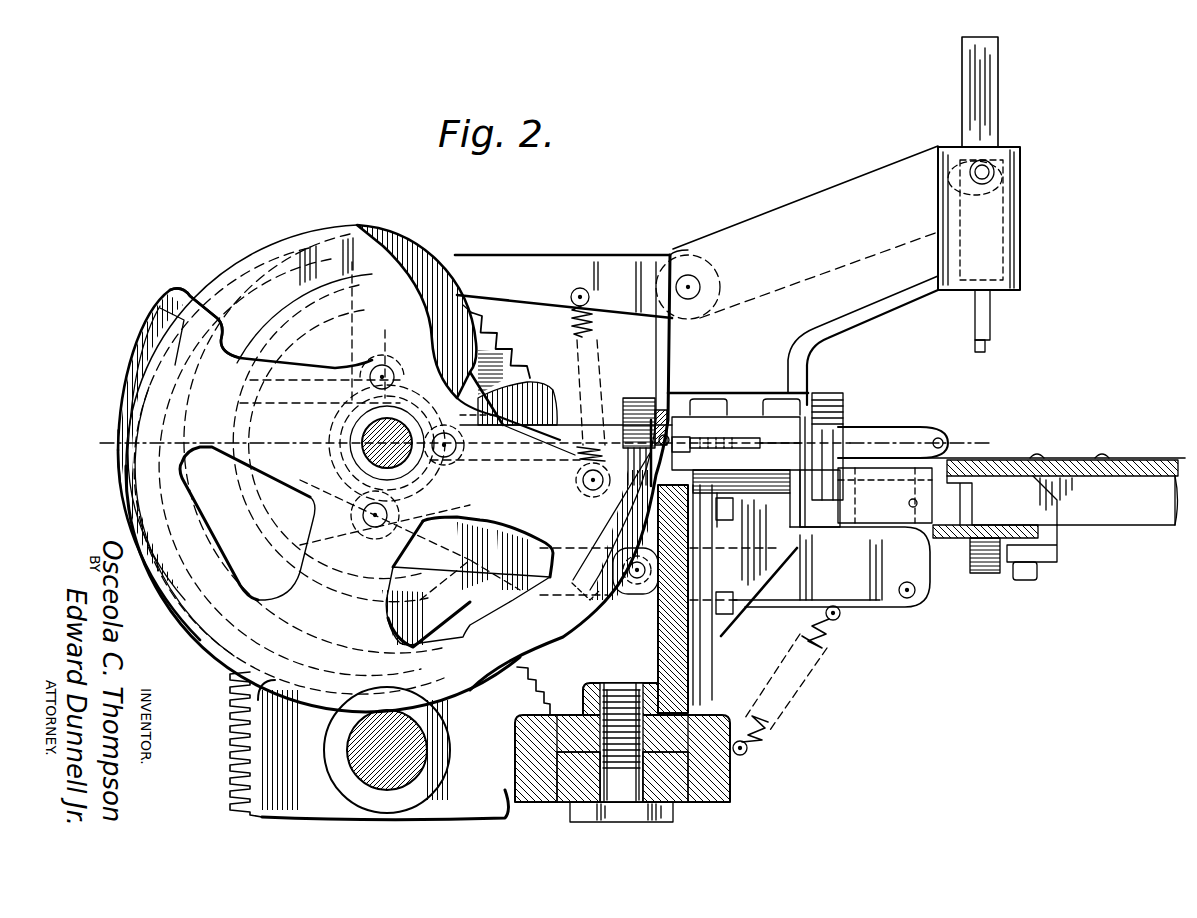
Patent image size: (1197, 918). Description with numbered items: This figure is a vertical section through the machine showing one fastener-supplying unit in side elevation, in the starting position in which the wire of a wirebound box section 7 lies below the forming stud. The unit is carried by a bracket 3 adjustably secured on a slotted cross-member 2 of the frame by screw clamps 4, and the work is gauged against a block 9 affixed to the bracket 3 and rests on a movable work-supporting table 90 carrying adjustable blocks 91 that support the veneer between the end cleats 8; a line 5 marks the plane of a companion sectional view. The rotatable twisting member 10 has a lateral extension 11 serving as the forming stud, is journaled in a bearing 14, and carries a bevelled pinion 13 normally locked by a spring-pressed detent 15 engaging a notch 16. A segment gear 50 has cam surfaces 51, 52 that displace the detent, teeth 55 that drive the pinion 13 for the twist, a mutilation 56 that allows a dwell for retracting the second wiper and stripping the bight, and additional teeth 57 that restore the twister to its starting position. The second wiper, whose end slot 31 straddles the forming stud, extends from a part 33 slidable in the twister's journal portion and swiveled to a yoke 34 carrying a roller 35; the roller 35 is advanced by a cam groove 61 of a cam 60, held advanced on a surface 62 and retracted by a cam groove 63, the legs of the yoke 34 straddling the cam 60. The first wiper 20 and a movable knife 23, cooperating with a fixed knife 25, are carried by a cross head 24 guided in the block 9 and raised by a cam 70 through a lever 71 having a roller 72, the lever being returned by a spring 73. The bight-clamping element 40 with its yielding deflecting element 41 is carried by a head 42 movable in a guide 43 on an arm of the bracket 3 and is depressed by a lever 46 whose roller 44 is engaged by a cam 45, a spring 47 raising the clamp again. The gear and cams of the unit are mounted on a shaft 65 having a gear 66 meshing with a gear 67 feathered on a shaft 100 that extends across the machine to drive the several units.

The slotted cross-member 2 is at (688, 782).
The bracket 3 is at (686, 682).
The screw clamps 4 is at (673, 812).
The section line 5- 5 is at (201, 436).
The wirebound box blank or section 7 is at (1120, 462).
The end cleats 8 is at (1140, 510).
The block 9 is at (835, 512).
The twisting member 10 is at (888, 440).
The lateral extension 11 is at (941, 440).
The bevelled pinion 13 is at (630, 398).
The bearing 14 is at (662, 410).
The spring-pressed detent 15 is at (605, 485).
The notch 16 is at (689, 396).
The wiper 20 is at (885, 495).
The movable knife 23 is at (885, 483).
The cross head 24 is at (862, 560).
The fixed knife 25 is at (840, 448).
The slot 31 is at (815, 400).
The slidable part 33 is at (582, 425).
The yoke 34 is at (501, 350).
The roller 35 is at (452, 454).
The clamping element 40 is at (990, 322).
The yielding bevelled element 41 is at (974, 347).
The head 42 is at (985, 112).
The guide 43 is at (1015, 210).
The roller 44 is at (372, 350).
The cam 45 is at (548, 390).
The lever 46 is at (657, 268).
The spring 47 is at (597, 318).
The segment gear 50 is at (115, 415).
The cam surface 51 is at (124, 443).
The cam surface 52 is at (582, 632).
The teeth 55 is at (216, 636).
The mutilation 56 is at (526, 652).
The additional teeth 57 is at (608, 600).
The cam 60 is at (357, 233).
The cam groove 61 is at (419, 272).
The surface 62 is at (277, 324).
The cam groove 63 is at (505, 606).
The shaft 65 is at (363, 438).
The gear 66 is at (481, 338).
The gear 67 is at (245, 735).
The cam 70 is at (481, 553).
The lever 71 is at (785, 598).
The roller 72 is at (385, 520).
The spring 73 is at (828, 640).
The work-supporting table 90 is at (956, 540).
The blocks 91 is at (1048, 542).
The shaft 100 is at (405, 743).